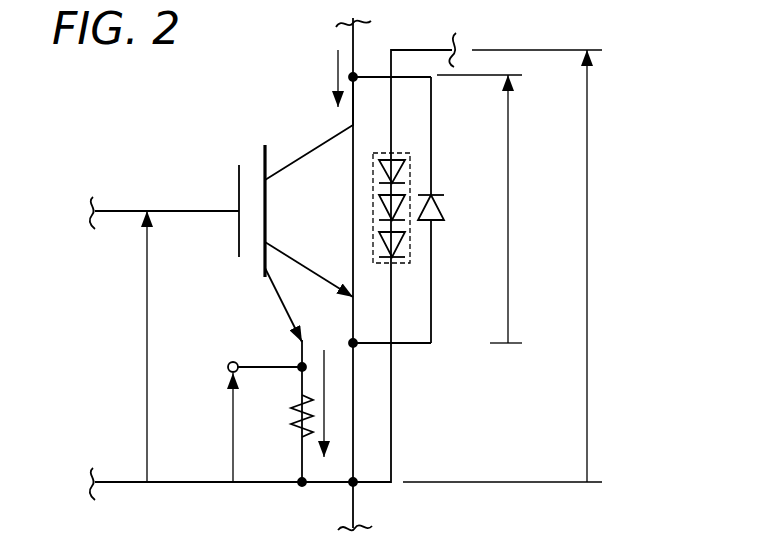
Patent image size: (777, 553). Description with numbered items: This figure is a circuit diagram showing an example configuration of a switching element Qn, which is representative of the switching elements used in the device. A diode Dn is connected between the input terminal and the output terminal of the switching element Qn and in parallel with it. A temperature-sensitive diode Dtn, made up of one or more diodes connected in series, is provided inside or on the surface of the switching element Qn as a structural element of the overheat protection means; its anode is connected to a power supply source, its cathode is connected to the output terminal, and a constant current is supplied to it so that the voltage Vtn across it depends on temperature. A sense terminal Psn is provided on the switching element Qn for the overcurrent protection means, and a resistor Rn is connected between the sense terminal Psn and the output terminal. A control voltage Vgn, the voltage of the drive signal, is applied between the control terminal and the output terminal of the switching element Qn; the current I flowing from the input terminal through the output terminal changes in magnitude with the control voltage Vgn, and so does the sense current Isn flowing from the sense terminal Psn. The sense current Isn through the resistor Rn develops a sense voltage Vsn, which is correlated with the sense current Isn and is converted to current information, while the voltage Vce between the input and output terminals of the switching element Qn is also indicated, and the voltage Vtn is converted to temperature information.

The switching element Qn is at (224, 279).
The temperature-sensitive diode Dtn is at (371, 213).
The diode Dn is at (449, 210).
The resistor Rn is at (283, 416).
The sense terminal Psn is at (252, 352).
The current I is at (329, 78).
The sense current Isn is at (329, 386).
The control voltage Vgn is at (124, 346).
The sense voltage Vsn is at (209, 427).
The collector-emitter voltage Vce is at (495, 209).
The voltage across the temperature-sensitive diode Vtn is at (520, 266).